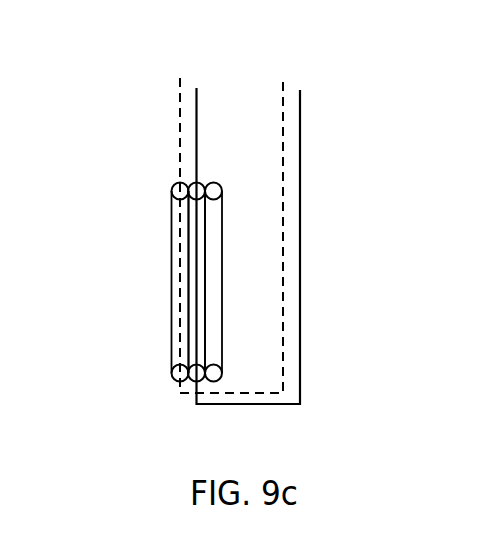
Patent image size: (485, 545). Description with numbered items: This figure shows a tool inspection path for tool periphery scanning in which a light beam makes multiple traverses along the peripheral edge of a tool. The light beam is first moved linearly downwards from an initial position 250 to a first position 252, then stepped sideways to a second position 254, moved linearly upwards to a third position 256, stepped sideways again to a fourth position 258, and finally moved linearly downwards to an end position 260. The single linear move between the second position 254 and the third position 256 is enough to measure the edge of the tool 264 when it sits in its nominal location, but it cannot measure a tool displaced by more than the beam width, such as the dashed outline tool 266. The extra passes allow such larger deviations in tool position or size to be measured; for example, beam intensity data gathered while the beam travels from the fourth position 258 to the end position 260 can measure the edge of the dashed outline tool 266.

The initial position 250 is at (222, 187).
The first position 252 is at (222, 374).
The second position 254 is at (194, 382).
The third position 256 is at (198, 185).
The fourth position 258 is at (172, 189).
The end position 260 is at (176, 380).
The tool 264 is at (300, 236).
The dashed outline tool 266 is at (282, 80).